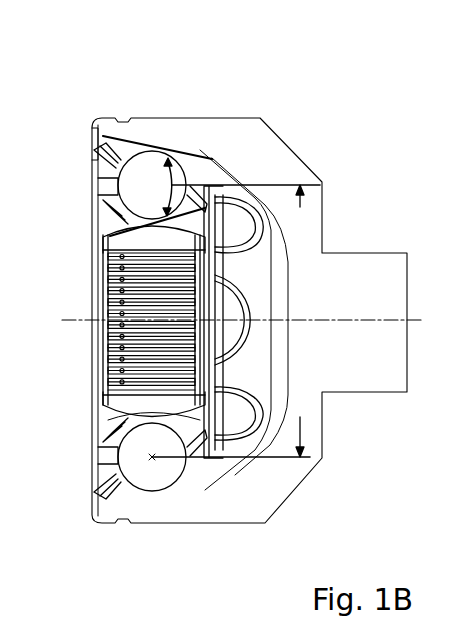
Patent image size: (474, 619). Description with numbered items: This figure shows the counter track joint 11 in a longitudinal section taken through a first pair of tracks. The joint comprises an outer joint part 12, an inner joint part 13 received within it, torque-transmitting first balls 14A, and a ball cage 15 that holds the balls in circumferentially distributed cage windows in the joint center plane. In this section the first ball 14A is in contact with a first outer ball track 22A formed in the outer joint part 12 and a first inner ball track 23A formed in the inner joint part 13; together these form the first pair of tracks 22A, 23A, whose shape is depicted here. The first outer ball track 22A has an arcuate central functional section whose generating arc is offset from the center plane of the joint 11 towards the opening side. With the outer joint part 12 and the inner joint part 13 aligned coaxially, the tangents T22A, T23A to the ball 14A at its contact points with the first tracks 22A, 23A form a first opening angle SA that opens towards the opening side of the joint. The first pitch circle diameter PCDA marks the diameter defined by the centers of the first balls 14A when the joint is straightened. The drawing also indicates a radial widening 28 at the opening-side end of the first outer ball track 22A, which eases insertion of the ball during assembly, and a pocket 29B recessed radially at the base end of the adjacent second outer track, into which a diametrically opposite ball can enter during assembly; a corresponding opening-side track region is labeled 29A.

The counter track joint 11 is at (76, 95).
The outer joint part 12 is at (278, 153).
The inner joint part 13 is at (134, 244).
The first ball 14A is at (152, 175).
The ball cage 15 is at (100, 198).
The first outer ball track 22A is at (130, 487).
The first inner ball track 23A is at (137, 413).
The housing wall 28 is at (92, 154).
The first track opening 29A is at (237, 177).
The pocket 29B is at (249, 233).
The tangent to the first ball at the first outer track T22A is at (200, 178).
The tangent to the first ball at the first inner track T23A is at (192, 212).
The first opening angle SA is at (152, 187).
The first pitch circle diameter PCDA is at (268, 322).